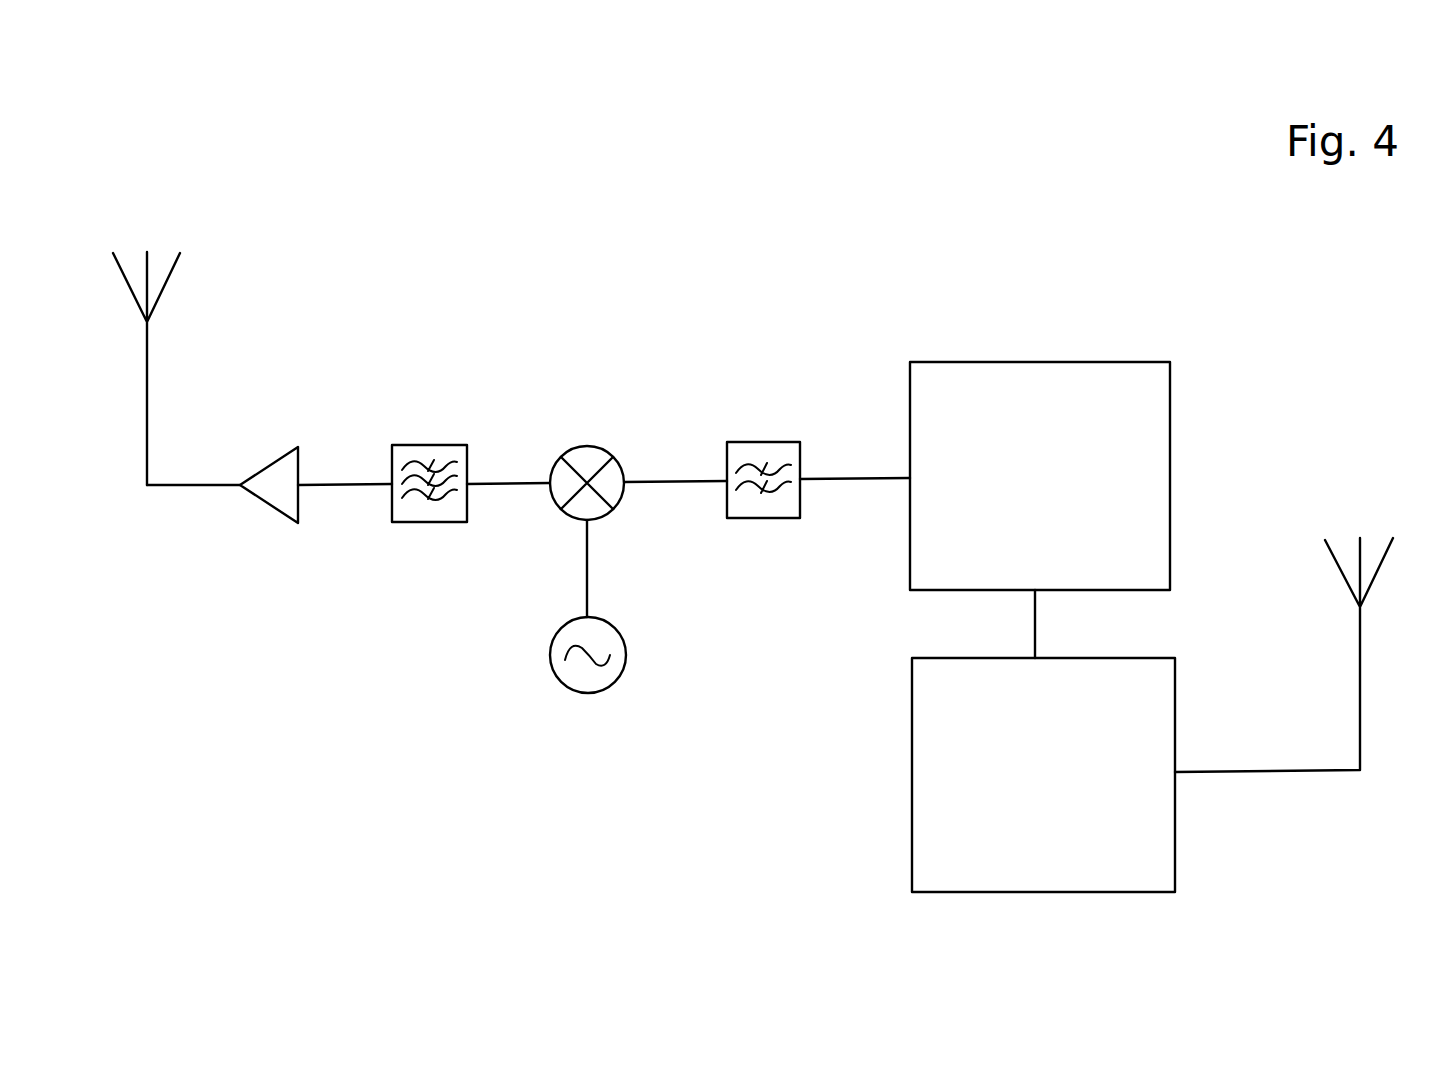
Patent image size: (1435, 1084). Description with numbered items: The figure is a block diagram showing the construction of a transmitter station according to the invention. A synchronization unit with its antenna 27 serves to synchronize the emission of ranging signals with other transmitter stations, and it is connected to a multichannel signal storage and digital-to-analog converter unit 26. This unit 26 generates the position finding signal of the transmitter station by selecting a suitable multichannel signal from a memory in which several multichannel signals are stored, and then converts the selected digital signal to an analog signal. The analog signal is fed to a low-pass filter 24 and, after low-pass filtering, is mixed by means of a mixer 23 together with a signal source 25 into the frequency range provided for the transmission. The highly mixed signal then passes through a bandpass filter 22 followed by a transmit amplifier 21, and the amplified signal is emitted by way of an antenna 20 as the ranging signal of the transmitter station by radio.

The antenna 20 is at (173, 262).
The transmit amplifier 21 is at (280, 453).
The bandpass filter 22 is at (430, 445).
The mixer 23 is at (597, 446).
The low-pass filter 24 is at (760, 442).
The signal source 25 is at (553, 635).
The multichannel signal storage and digital-to-analog converter unit 26 is at (1033, 362).
The synchronization unit with antenna 27 is at (912, 680).